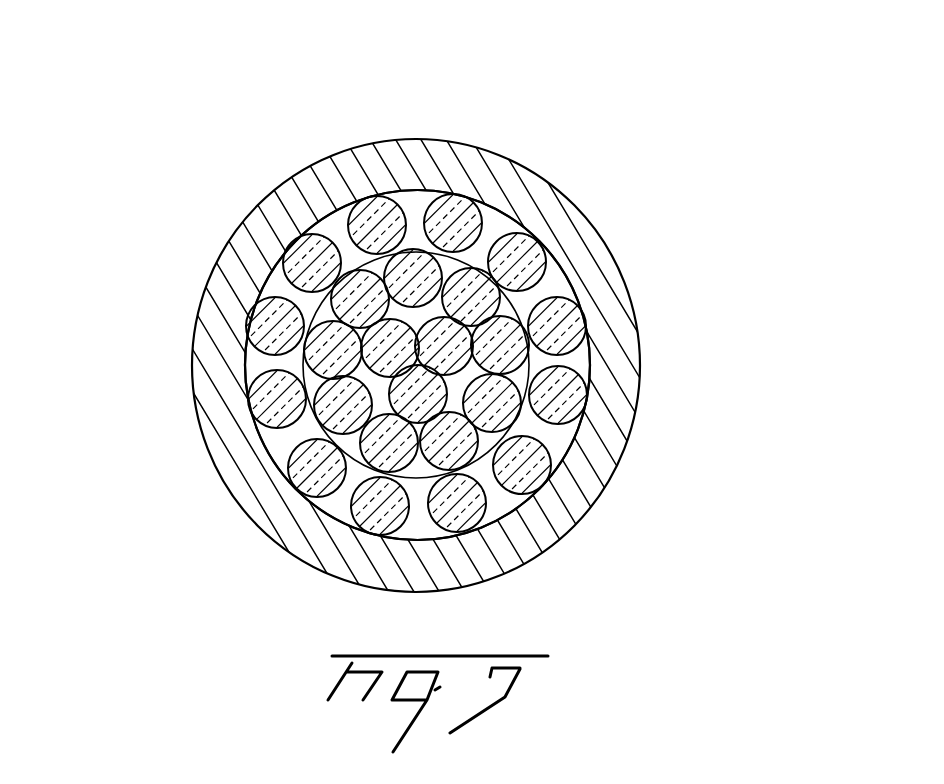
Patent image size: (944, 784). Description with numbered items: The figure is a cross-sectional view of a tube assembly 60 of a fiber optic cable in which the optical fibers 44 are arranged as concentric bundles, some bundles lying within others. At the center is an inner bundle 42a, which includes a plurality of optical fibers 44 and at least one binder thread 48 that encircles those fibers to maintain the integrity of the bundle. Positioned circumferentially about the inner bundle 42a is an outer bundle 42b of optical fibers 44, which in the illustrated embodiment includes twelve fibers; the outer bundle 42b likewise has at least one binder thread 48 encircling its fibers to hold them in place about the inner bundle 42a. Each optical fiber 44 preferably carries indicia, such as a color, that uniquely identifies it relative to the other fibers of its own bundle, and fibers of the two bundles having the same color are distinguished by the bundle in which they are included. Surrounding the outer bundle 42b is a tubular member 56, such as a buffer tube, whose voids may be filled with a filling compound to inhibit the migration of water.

The tube assembly 60 is at (598, 130).
The tubular member 56 is at (569, 519).
The binder thread 48 is at (535, 360).
The outer bundle 42b is at (338, 221).
The inner bundle 42a is at (355, 451).
The optical fiber 44 is at (532, 256).